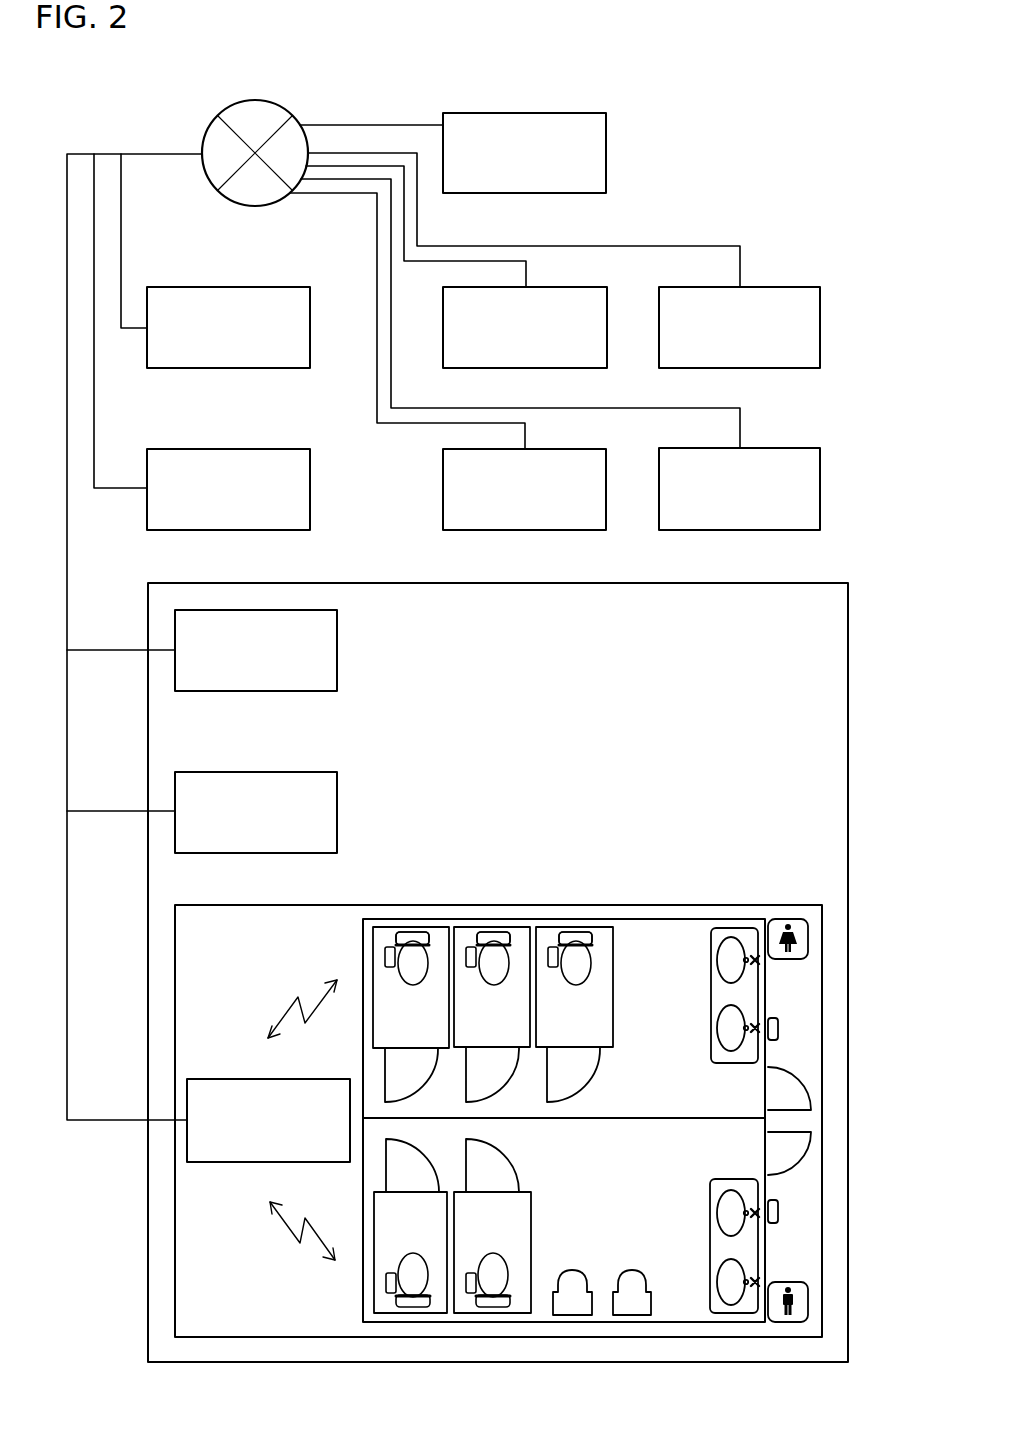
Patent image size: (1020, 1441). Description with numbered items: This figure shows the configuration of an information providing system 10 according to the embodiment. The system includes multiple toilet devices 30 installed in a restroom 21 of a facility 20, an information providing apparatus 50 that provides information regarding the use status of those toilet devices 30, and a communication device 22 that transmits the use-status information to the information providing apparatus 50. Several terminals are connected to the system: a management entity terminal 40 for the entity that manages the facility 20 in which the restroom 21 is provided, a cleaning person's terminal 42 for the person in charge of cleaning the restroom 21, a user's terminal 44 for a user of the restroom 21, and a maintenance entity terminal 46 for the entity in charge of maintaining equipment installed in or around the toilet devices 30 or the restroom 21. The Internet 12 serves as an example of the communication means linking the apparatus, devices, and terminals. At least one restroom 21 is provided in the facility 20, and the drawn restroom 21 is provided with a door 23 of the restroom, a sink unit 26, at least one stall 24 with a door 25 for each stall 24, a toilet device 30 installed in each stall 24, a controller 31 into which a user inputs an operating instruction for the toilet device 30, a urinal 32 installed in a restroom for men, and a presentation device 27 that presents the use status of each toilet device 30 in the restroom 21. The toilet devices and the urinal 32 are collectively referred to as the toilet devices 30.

The information providing system 10 is at (820, 102).
The Internet 12 is at (255, 99).
The facility 20 is at (310, 335).
The restroom 21 is at (337, 655).
The communication device 22 is at (310, 1079).
The door 23 is at (790, 1075).
The stall 24 is at (613, 972).
The door 25 is at (624, 1070).
The sink unit 26 is at (711, 979).
The presentation device 27 is at (778, 1018).
The toilet device 30 is at (576, 986).
The controller 31 is at (528, 988).
The urinal 32 is at (637, 1266).
The management entity terminal 40 is at (607, 335).
The cleaning person's terminal 42 is at (820, 335).
The user's terminal 44 is at (606, 497).
The maintenance entity terminal 46 is at (820, 497).
The information providing apparatus 50 is at (606, 162).